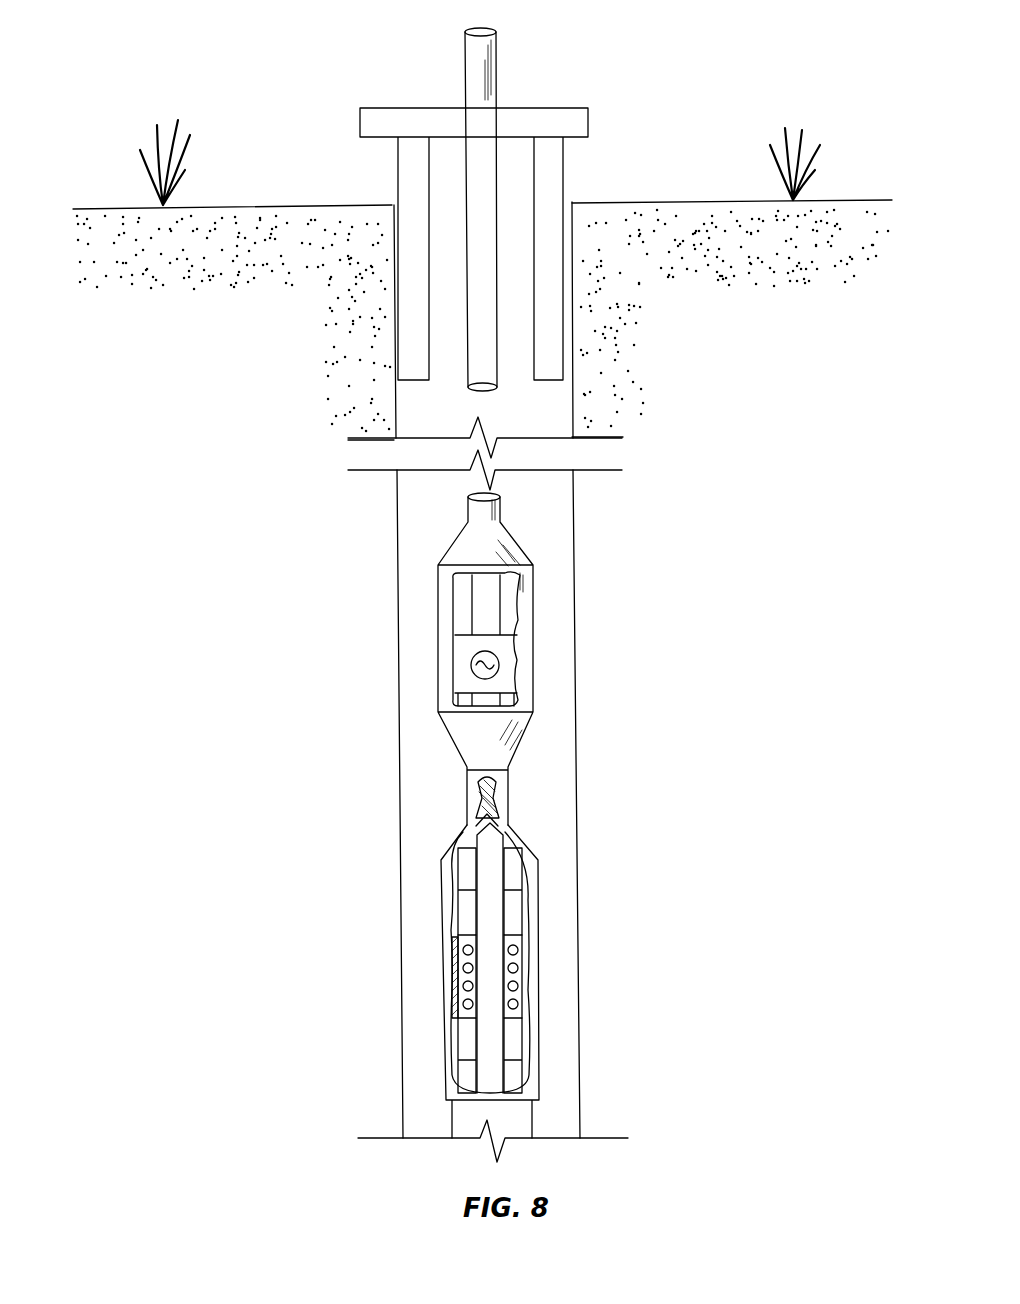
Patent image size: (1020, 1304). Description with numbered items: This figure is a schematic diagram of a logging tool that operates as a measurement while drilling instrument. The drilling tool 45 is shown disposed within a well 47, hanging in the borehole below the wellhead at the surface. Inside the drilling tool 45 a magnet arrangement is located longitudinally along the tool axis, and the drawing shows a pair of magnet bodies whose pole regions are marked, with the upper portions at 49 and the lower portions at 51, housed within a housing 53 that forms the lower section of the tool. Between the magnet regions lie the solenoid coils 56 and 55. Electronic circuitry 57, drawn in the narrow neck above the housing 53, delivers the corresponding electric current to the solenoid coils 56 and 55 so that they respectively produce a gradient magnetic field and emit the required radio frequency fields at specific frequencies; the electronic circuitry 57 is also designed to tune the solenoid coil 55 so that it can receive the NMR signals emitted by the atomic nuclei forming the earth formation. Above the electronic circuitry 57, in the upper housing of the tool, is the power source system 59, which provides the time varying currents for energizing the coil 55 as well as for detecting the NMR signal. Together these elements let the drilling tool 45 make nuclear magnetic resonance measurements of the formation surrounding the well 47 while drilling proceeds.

The drilling tool 45 is at (410, 540).
The well 47 is at (397, 180).
The upper magnet 49 is at (464, 901).
The lower magnet 51 is at (466, 1063).
The housing 53 is at (538, 886).
The solenoid coil 55 is at (519, 947).
The solenoid coil 56 is at (453, 998).
The electronic circuitry 57 is at (497, 797).
The power source system 59 is at (463, 661).